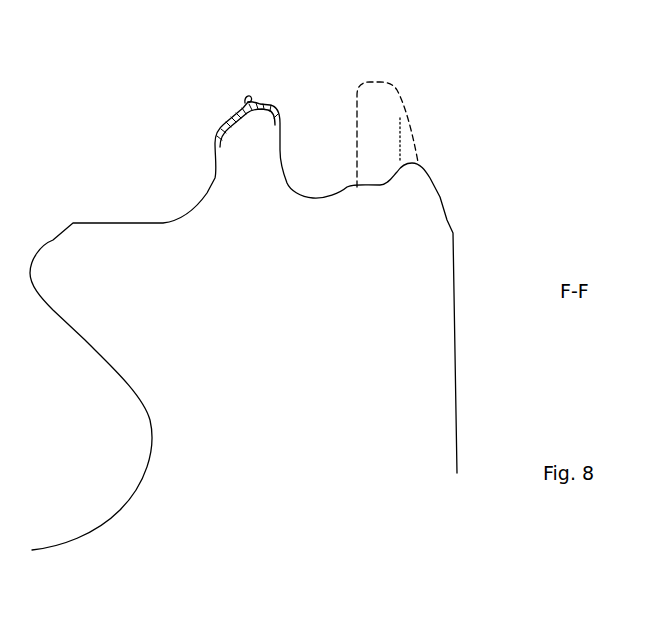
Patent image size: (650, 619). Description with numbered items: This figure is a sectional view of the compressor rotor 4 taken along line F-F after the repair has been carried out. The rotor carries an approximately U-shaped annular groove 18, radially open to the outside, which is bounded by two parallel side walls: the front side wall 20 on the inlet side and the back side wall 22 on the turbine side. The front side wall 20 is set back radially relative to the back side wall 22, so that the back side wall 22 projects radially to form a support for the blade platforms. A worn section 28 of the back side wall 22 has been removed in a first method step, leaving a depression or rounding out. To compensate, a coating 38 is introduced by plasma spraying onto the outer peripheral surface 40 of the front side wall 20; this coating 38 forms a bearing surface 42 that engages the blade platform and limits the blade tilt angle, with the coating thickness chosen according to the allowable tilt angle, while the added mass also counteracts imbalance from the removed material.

The compressor rotor 4 is at (314, 312).
The annular groove 18 is at (302, 118).
The front side wall 20 is at (233, 147).
The back side wall 22 is at (497, 185).
The worn section 28 is at (393, 133).
The coating 38 is at (250, 98).
The outer peripheral surface 40 is at (254, 107).
The bearing surface 42 is at (253, 107).